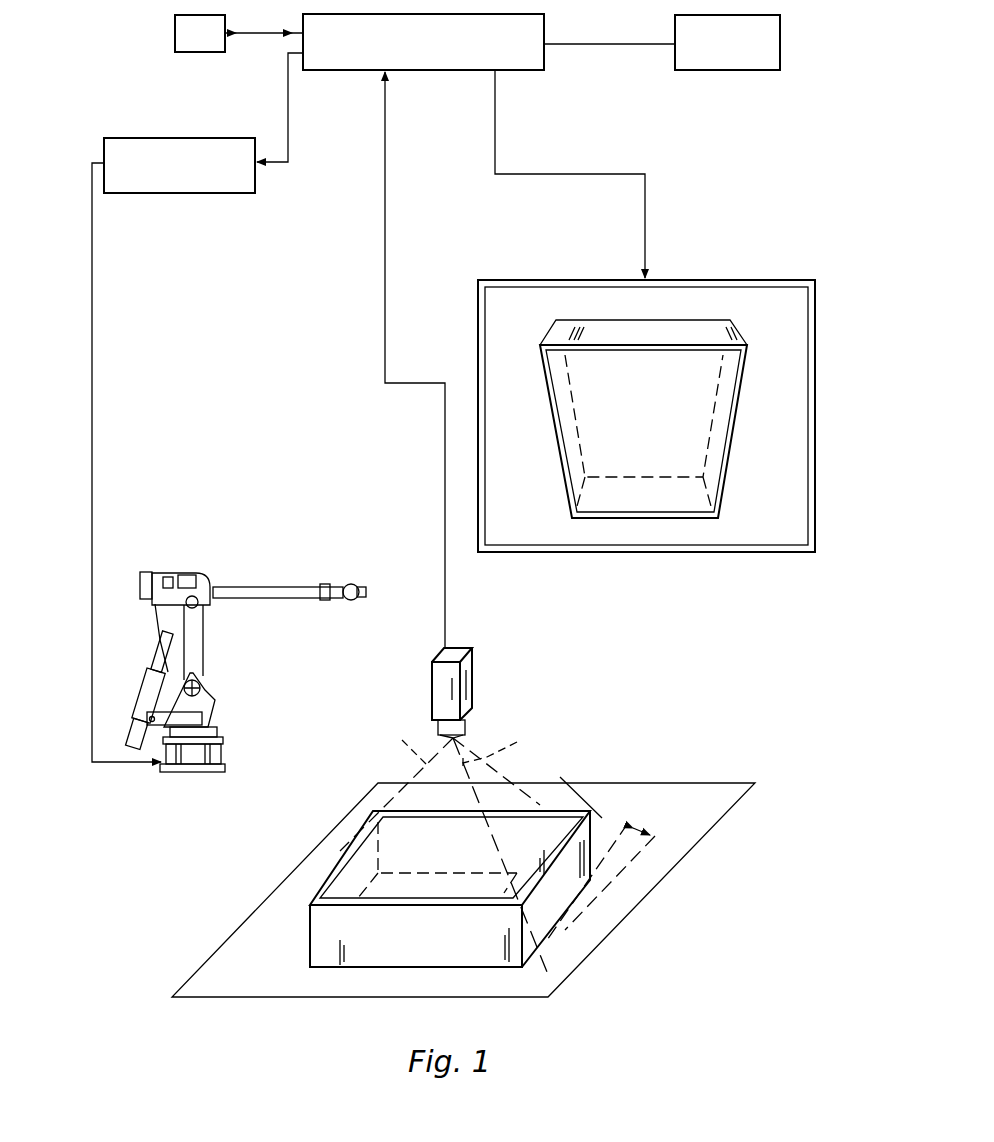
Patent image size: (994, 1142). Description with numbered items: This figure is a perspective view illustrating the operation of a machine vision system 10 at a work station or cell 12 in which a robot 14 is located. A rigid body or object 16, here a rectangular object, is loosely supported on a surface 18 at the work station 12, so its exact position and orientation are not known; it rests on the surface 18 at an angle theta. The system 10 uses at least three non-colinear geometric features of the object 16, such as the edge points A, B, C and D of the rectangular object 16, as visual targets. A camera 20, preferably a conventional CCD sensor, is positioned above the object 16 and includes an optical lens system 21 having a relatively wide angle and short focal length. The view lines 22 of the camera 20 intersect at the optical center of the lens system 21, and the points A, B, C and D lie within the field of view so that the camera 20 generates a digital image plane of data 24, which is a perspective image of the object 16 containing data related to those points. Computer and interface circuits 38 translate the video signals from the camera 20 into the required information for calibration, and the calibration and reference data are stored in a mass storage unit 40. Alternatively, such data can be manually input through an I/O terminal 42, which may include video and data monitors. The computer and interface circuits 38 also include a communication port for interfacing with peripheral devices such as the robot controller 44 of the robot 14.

The machine vision system 10 is at (391, 567).
The work station or cell 12 is at (212, 838).
The robot 14 is at (143, 586).
The rigid body or object 16 is at (547, 806).
The surface 18 is at (668, 795).
The camera 20 is at (472, 690).
The optical lens system 21 is at (465, 727).
The view lines 22 is at (443, 850).
The digital image plane of data 24 is at (815, 468).
The computer and interface circuits 38 is at (545, 64).
The mass storage unit 40 is at (752, 70).
The I/O terminal 42 is at (177, 29).
The robot controller 44 is at (188, 137).